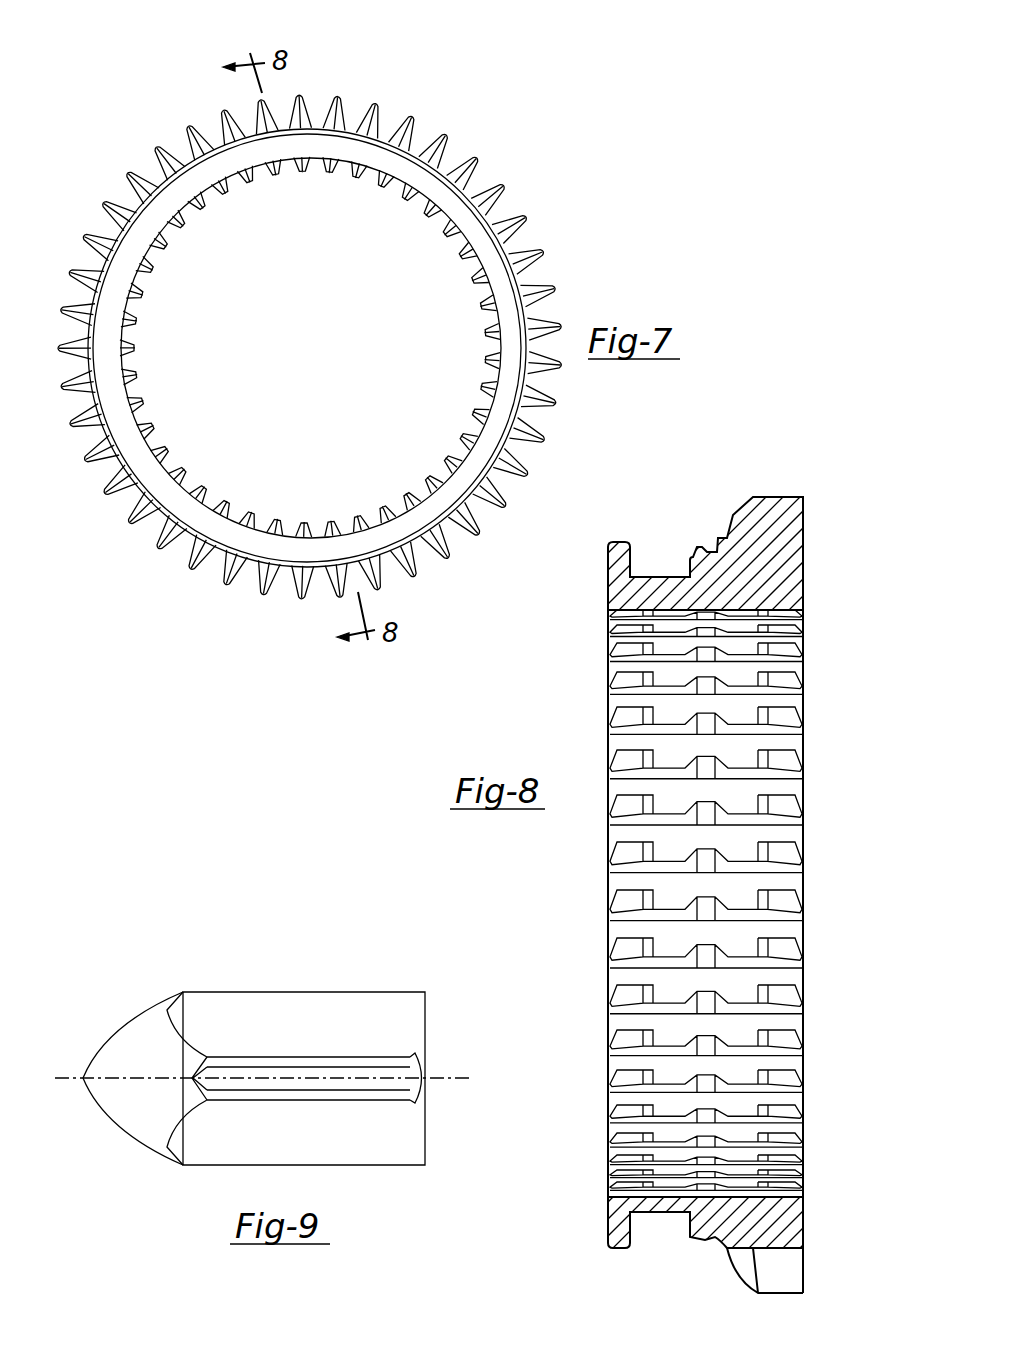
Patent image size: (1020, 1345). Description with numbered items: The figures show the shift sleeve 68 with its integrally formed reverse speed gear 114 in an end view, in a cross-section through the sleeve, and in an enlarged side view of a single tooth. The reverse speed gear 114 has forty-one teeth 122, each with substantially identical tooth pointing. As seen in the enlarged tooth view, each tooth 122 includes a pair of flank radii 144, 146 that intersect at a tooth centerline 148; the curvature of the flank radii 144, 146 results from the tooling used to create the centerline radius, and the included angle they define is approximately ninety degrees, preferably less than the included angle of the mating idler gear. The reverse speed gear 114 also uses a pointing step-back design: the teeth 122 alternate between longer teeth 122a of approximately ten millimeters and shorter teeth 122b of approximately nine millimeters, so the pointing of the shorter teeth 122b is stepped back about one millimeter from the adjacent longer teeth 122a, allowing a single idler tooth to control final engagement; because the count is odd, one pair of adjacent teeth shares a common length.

In FIG. 7, the first shift sleeve 68 is at (336, 308).
In FIG. 8, the first shift sleeve 68 is at (704, 917).
In FIG. 7, the reverse speed gear 114 is at (532, 217).
In FIG. 8, the reverse speed gear 114 is at (805, 1293).
In FIG. 7, the teeth 122 is at (448, 145).
In FIG. 9, the teeth 122 is at (270, 1034).
In FIG. 8, the longer teeth 122a is at (803, 497).
In FIG. 8, the shorter teeth 122b is at (810, 1268).
In FIG. 9, the flank radius 144 is at (127, 1030).
In FIG. 9, the flank radius 146 is at (123, 1127).
In FIG. 9, the tooth centerline 148 is at (450, 1078).